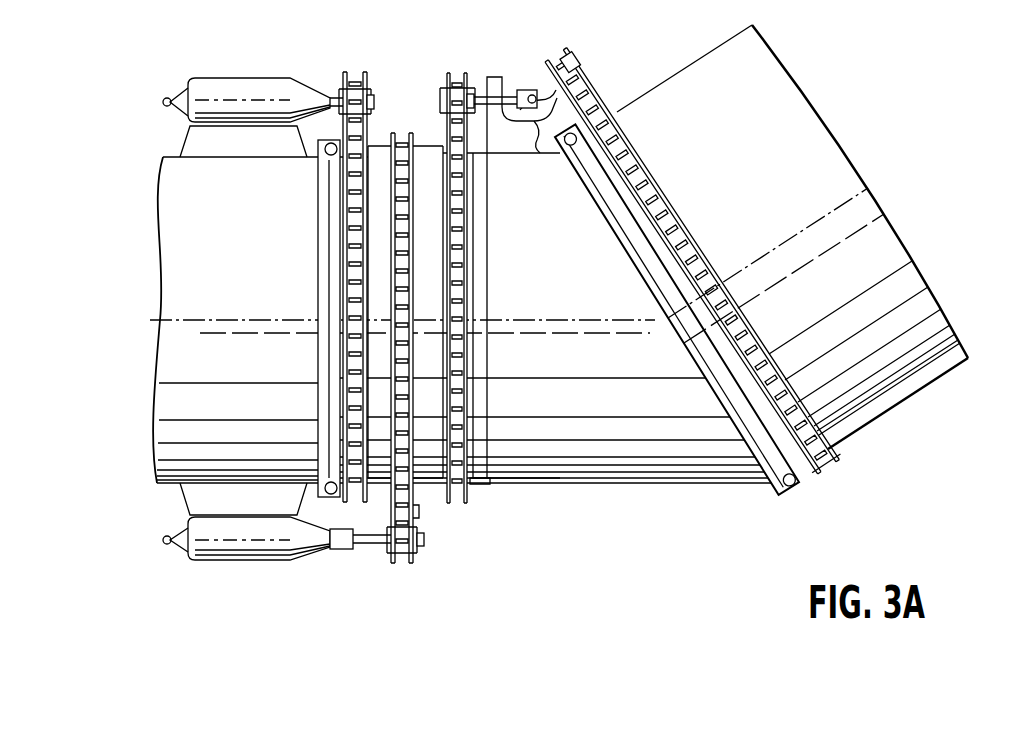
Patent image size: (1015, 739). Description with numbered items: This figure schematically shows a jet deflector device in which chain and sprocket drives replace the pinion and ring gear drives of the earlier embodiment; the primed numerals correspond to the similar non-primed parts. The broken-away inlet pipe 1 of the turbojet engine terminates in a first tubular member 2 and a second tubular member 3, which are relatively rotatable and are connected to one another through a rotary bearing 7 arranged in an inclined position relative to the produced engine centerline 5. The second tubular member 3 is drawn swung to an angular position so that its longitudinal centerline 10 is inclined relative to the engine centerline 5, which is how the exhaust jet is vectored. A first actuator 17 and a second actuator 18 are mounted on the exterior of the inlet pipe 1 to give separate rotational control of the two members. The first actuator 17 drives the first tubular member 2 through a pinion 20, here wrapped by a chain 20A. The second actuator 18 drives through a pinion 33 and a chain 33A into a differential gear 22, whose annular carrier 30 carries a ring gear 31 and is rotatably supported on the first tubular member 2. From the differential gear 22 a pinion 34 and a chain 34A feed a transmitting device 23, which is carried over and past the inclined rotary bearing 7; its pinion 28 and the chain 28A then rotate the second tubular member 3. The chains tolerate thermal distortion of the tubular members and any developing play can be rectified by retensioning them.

The inlet pipe 1 is at (173, 402).
The first tubular member 2 is at (558, 457).
The second tubular member 3 is at (883, 397).
The produced engine centerline 5 is at (228, 318).
The rotary bearing 7 is at (793, 483).
The longitudinal centerline 10 is at (767, 254).
The first actuator 17 is at (218, 92).
The second actuator 18 is at (225, 540).
The pinion 20 is at (371, 88).
The chain 20A is at (343, 364).
The differential gear 22 is at (428, 80).
The transmitting device 23 is at (520, 74).
The pinion 28 is at (574, 58).
The chain 28A is at (829, 466).
The annular carrier 30 is at (432, 477).
The ring gear 31 is at (428, 160).
The pinion 33 is at (418, 547).
The chain 33A is at (413, 512).
The pinion 34 is at (470, 88).
The chain 34A is at (470, 488).